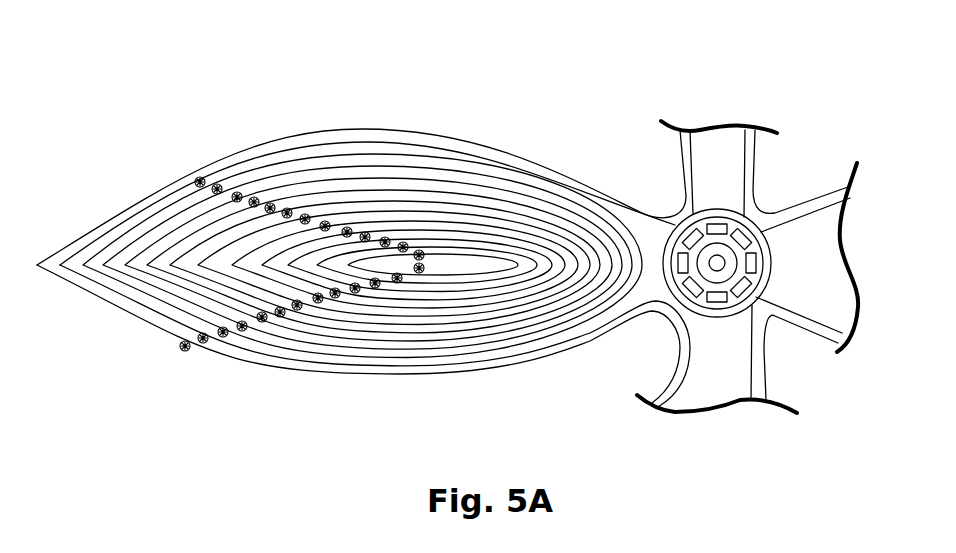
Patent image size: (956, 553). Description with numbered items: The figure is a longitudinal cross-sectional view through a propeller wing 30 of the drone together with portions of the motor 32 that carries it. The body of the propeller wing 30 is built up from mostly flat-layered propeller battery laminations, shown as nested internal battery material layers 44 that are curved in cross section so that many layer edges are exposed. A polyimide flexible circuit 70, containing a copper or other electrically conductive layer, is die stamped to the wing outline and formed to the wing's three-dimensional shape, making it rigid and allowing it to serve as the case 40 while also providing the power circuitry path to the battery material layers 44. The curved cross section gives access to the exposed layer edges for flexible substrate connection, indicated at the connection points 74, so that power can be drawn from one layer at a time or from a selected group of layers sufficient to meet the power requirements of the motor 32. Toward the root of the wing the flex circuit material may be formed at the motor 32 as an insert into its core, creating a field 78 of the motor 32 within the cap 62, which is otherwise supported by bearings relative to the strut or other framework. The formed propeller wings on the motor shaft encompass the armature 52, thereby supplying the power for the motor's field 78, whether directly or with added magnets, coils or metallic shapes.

The propeller wing 30 is at (361, 96).
The motor 32 is at (678, 214).
The case 40 is at (178, 180).
The battery material layers 44 is at (208, 285).
The armature 52 is at (719, 258).
The cap 62 is at (771, 257).
The polyimide flexible circuit 70 is at (459, 141).
The flexible substrate connection 74 is at (293, 229).
The field 78 is at (738, 291).